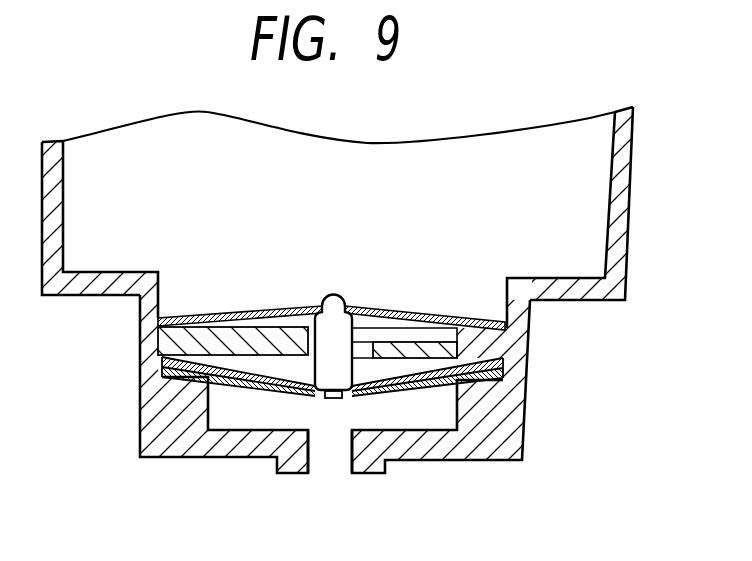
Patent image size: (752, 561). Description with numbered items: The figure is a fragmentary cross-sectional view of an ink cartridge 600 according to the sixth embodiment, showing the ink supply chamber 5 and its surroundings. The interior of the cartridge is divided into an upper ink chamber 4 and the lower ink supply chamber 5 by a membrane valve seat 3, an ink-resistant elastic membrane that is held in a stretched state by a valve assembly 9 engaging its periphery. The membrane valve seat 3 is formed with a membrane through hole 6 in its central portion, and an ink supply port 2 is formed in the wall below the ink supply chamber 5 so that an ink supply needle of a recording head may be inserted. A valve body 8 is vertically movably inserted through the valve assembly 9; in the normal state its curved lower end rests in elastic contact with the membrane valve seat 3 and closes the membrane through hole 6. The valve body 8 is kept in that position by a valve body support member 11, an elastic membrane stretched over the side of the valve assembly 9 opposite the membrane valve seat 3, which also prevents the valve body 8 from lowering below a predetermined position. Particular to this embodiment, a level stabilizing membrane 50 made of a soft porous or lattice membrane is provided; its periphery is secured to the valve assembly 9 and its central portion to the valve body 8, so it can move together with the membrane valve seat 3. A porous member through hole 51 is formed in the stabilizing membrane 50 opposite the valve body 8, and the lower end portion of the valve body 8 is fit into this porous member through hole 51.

The ink cartridge 600 is at (648, 197).
The ink chamber 4 is at (577, 243).
The ink supply chamber 5 is at (442, 417).
The ink supply port 2 is at (340, 462).
The valve assembly 9 is at (497, 340).
The level stabilizing membrane 50 is at (362, 367).
The valve body support member 11 is at (223, 310).
The membrane valve seat 3 is at (252, 392).
The porous member through hole 51 is at (403, 392).
The valve body 8 is at (325, 320).
The membrane through hole 6 is at (331, 400).